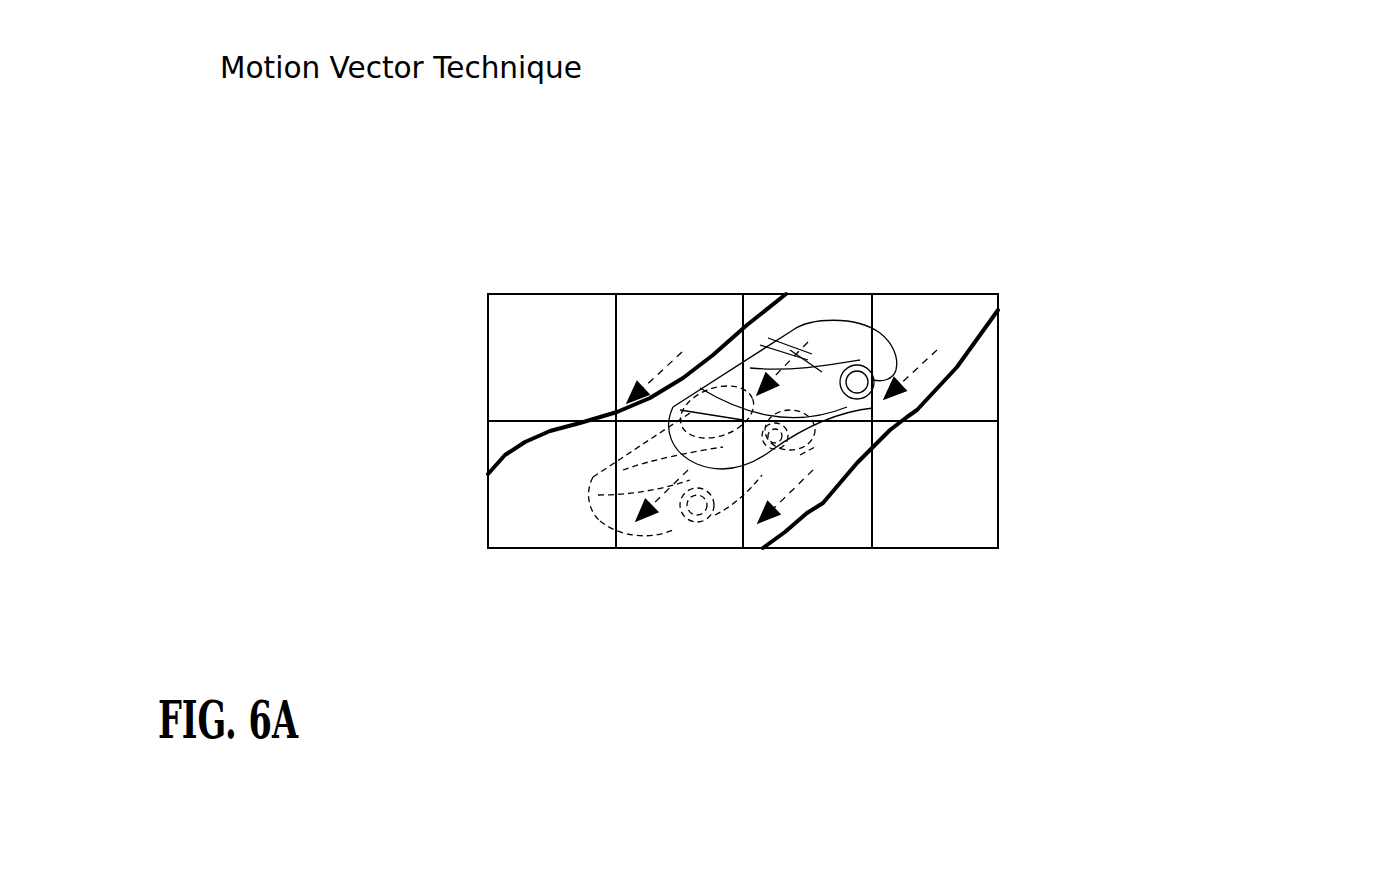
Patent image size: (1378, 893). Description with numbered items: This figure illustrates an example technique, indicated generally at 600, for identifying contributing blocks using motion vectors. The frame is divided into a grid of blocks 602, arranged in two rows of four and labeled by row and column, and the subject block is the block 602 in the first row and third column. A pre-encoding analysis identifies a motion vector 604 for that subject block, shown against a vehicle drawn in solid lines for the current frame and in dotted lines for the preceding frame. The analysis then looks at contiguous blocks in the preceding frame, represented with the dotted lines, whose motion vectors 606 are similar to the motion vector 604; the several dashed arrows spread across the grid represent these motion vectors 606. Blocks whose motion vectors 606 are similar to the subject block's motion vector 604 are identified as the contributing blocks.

The motion vector technique image 600 is at (1190, 215).
The block 602 is at (926, 574).
The motion vector 604 is at (873, 413).
The motion vectors 606 is at (778, 345).